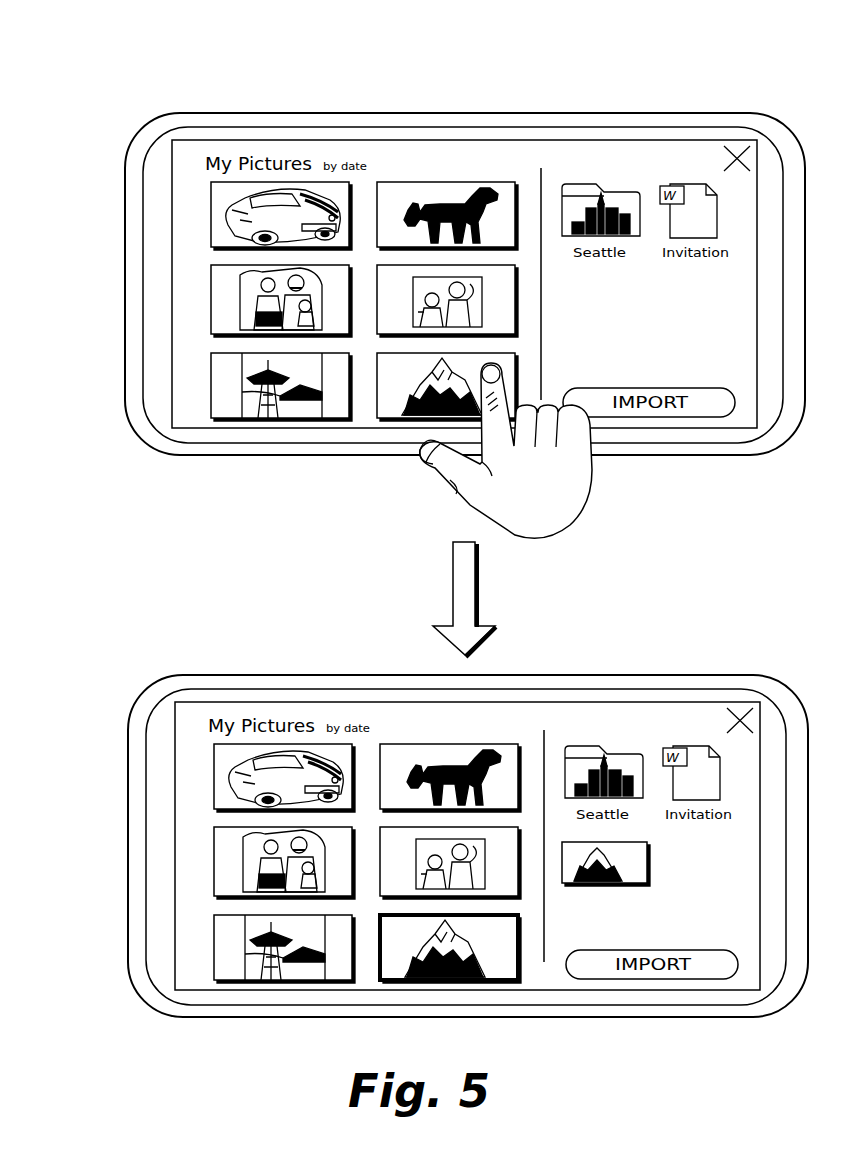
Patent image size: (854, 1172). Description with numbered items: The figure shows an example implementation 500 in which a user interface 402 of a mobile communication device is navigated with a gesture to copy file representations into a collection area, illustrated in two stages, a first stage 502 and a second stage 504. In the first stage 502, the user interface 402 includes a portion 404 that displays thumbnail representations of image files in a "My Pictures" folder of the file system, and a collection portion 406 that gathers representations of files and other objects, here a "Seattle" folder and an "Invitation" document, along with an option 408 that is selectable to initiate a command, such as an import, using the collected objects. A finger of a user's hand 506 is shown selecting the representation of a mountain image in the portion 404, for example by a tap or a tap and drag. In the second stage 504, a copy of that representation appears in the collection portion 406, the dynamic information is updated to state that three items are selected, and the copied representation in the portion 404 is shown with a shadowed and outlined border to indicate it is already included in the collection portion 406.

The example implementation 500 is at (157, 58).
The first stage 502 is at (135, 106).
The second stage 504 is at (147, 633).
The portion 404 is at (263, 106).
The collection portion 406 is at (597, 106).
The user interface 402 is at (480, 165).
The option 408 is at (648, 468).
The user's hand 506 is at (562, 513).